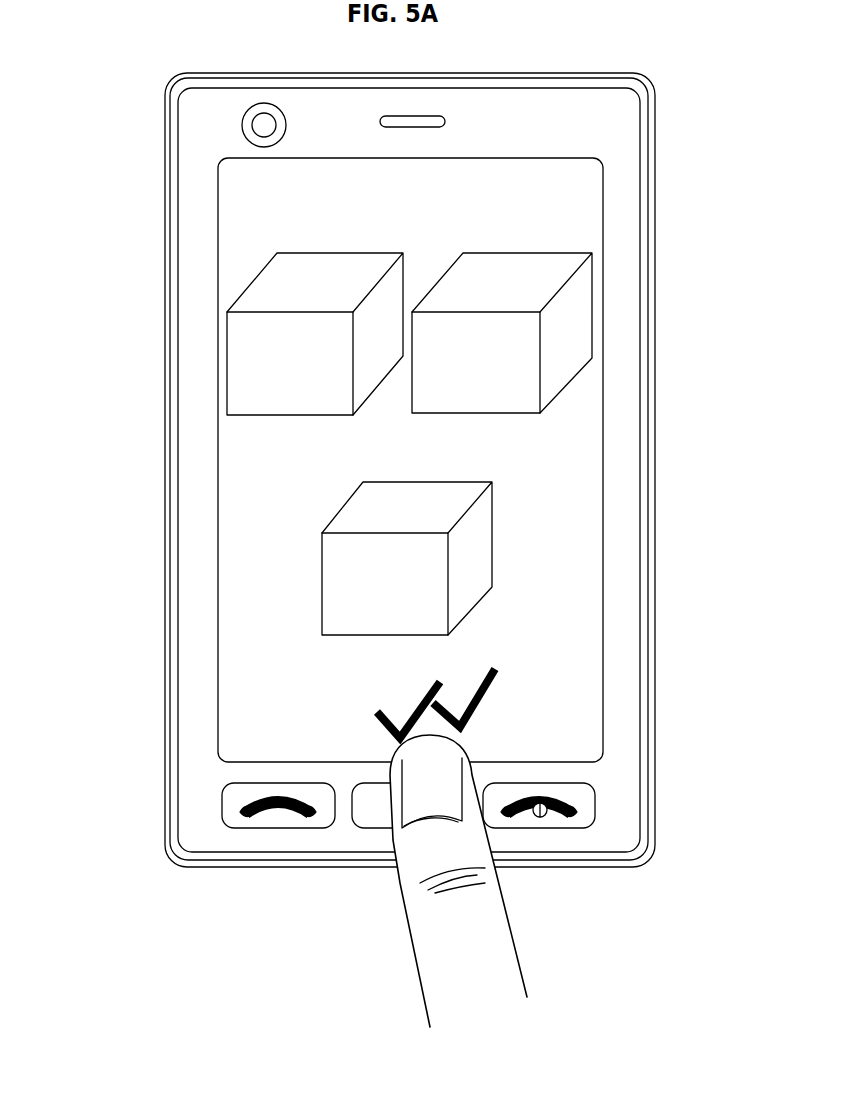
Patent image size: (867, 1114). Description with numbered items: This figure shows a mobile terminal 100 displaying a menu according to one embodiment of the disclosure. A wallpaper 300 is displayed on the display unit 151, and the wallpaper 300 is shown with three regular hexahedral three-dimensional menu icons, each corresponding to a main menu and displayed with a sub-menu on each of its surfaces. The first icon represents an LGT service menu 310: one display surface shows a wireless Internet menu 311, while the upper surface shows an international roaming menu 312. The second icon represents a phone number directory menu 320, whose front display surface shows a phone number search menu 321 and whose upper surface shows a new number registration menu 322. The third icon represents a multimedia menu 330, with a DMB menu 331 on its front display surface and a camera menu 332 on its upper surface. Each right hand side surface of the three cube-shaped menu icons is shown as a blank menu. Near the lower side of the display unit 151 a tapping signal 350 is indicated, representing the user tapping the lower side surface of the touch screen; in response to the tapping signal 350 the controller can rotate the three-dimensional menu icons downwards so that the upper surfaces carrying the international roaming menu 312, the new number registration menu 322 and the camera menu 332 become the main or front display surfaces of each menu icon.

The mobile terminal 100 is at (165, 125).
The display unit 151 is at (602, 738).
The wallpaper 300 is at (588, 190).
The LGT service menu 310 is at (245, 323).
The wireless Internet menu 311 is at (245, 337).
The international roaming menu 312 is at (262, 292).
The phone number directory menu 320 is at (577, 323).
The phone number search menu 321 is at (530, 330).
The new number registration menu 322 is at (557, 257).
The multimedia menu 330 is at (401, 583).
The DMB menu 331 is at (335, 598).
The camera menu 332 is at (363, 500).
The tapping signal 350 is at (500, 665).